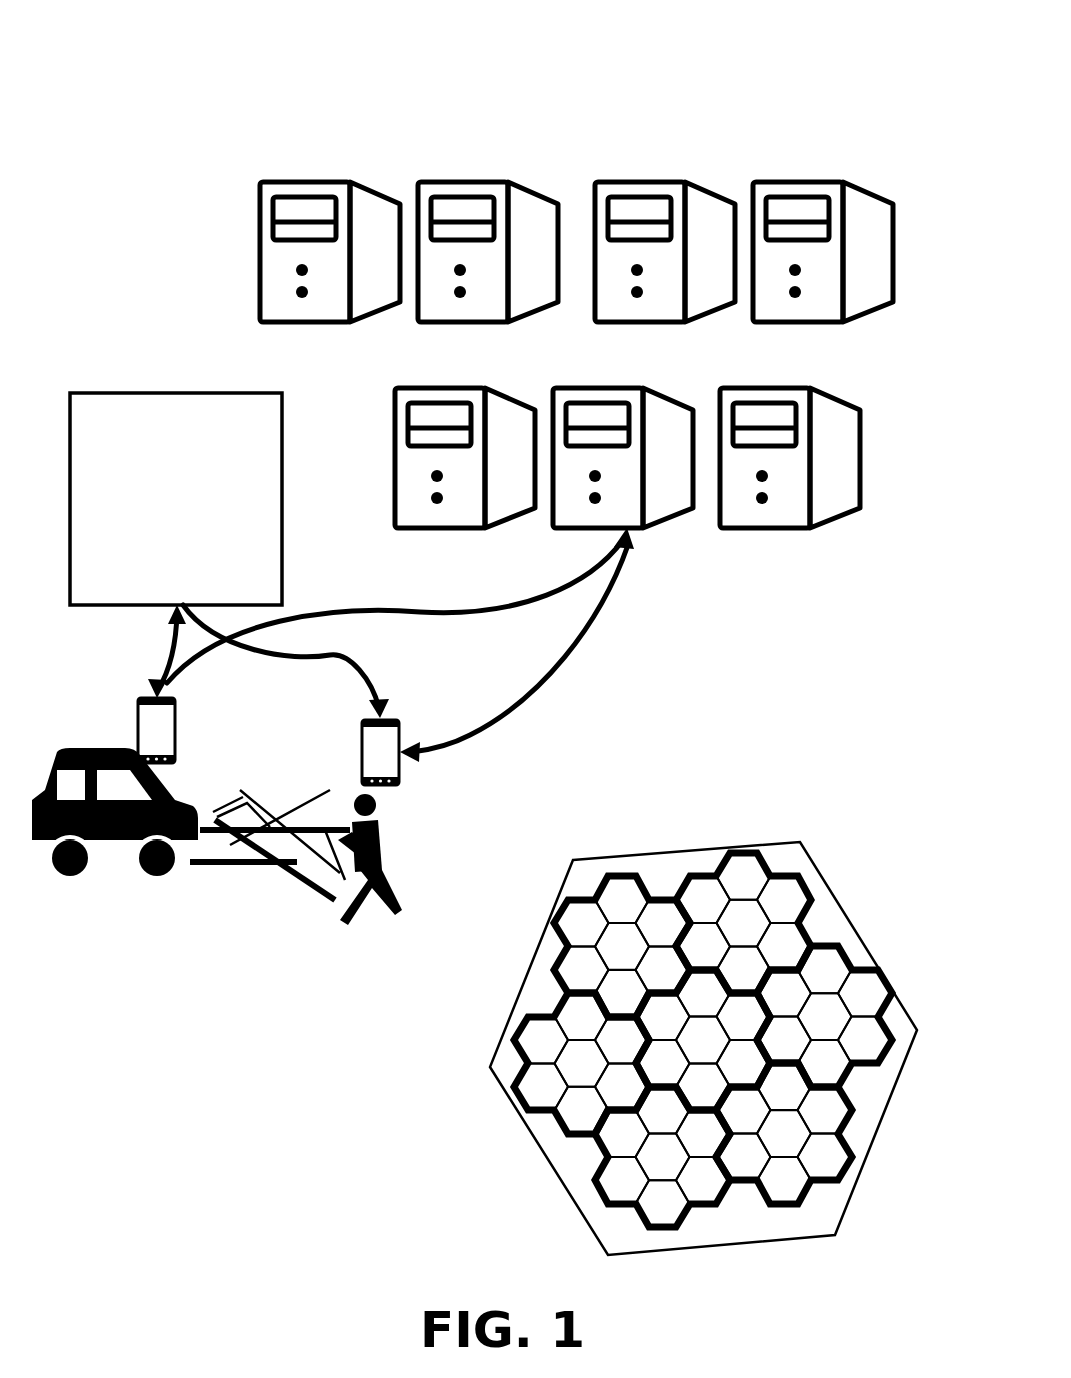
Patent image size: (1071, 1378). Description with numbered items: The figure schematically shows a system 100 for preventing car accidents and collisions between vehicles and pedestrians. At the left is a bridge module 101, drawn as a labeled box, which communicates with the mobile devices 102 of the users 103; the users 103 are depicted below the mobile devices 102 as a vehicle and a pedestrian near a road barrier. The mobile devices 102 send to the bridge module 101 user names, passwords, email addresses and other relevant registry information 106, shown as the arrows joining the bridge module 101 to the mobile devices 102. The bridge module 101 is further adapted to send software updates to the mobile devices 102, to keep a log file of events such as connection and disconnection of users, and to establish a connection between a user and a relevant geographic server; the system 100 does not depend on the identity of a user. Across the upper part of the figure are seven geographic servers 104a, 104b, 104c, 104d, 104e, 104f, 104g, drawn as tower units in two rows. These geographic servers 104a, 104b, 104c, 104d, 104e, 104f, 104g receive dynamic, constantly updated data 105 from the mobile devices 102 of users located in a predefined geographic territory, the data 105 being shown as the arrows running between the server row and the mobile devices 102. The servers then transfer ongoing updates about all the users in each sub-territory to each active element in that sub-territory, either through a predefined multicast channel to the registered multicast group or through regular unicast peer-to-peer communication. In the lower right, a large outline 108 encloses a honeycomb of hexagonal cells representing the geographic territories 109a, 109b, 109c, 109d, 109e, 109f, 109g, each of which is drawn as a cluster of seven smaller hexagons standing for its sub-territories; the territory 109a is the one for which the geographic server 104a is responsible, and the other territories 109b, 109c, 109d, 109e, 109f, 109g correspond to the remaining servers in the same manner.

The system 100 is at (133, 73).
The bridge module 101 is at (112, 393).
The mobile devices 102 is at (362, 760).
The users 103 is at (105, 877).
The geographic server 104a is at (330, 234).
The geographic server 104b is at (488, 234).
The geographic server 104c is at (665, 234).
The geographic server 104d is at (823, 234).
The geographic server 104e is at (465, 440).
The geographic server 104f is at (623, 440).
The geographic server 104g is at (790, 440).
The dynamic data 105 is at (523, 712).
The registry information 106 is at (155, 672).
The geographic region 108 is at (580, 1218).
The territory 109a is at (635, 880).
The cell cluster 109b is at (795, 880).
The cell cluster 109c is at (865, 975).
The cell cluster 109d is at (852, 1158).
The cell cluster 109e is at (660, 1235).
The cell cluster 109f is at (510, 1045).
The cell cluster 109g is at (657, 993).